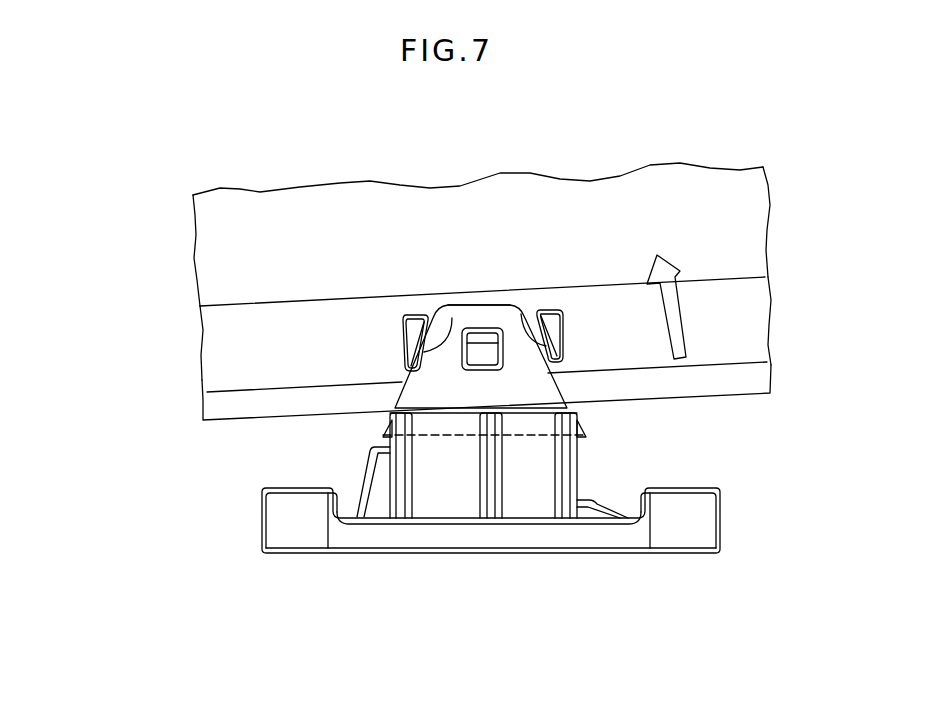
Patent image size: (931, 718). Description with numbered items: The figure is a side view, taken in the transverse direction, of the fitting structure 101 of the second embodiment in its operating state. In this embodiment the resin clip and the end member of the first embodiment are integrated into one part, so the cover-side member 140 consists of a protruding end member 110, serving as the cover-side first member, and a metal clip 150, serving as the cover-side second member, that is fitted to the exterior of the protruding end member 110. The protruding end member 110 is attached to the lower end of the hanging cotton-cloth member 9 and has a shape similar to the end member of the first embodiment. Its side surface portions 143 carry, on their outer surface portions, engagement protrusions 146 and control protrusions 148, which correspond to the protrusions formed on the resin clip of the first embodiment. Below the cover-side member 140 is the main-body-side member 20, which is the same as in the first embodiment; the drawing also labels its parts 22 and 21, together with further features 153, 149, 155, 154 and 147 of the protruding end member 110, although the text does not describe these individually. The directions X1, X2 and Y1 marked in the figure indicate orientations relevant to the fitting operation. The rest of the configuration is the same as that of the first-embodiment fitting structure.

The fitting structure 101 is at (197, 148).
The hanging cotton-cloth member 9 is at (212, 238).
The side surface portions 143 is at (262, 316).
The cover-side member 140 is at (125, 317).
The protruding end member 110 is at (225, 350).
The metal clip 150 is at (408, 376).
The engagement protrusions 146 is at (484, 323).
The top surface 153 is at (509, 317).
The guide rib 149 is at (452, 318).
The control protrusions 148 is at (412, 314).
The slot rib 155 is at (426, 320).
The ribbed base of post 154 is at (470, 368).
The window 147 is at (487, 355).
The main-body-side member 20 is at (383, 558).
The base plate inner wall 22 is at (491, 520).
The seating surface 21 is at (525, 490).
The direction X1 is at (505, 368).
The direction X2 is at (547, 363).
The direction Y1 is at (682, 307).